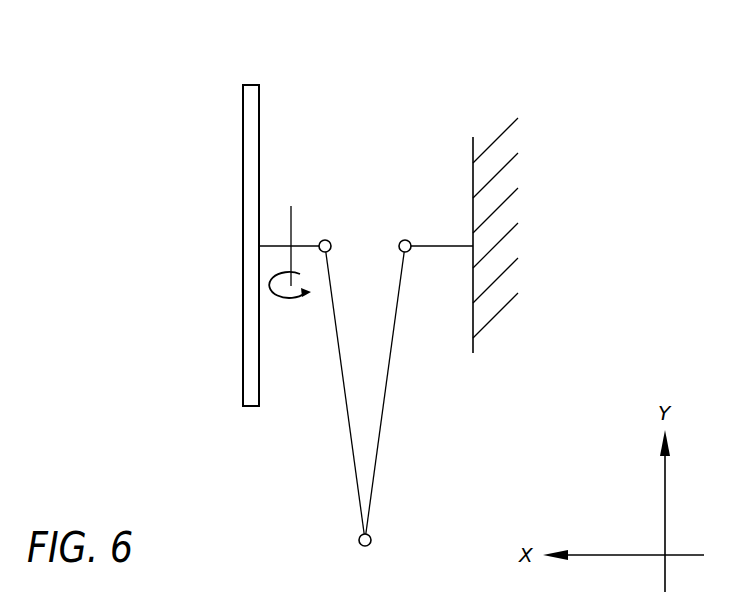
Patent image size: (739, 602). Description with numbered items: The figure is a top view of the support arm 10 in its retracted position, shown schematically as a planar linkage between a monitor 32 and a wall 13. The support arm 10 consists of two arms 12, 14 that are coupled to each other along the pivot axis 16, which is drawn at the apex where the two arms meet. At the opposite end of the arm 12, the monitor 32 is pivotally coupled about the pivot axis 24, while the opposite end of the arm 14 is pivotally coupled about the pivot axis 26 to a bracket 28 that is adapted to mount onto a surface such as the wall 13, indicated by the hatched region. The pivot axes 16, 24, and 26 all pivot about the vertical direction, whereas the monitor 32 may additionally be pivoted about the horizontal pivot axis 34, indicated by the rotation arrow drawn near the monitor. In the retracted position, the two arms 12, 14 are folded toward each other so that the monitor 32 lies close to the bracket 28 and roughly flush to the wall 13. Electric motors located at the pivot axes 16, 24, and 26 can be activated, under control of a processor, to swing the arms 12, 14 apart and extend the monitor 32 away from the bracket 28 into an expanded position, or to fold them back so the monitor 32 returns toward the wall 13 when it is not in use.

The support arm 10 is at (434, 84).
The arm 12 is at (343, 393).
The wall 13 is at (515, 172).
The arm 14 is at (388, 393).
The pivot axis 16 is at (365, 547).
The pivot axis 24 is at (325, 240).
The pivot axis 26 is at (405, 240).
The bracket 28 is at (445, 246).
The monitor 32 is at (250, 408).
The pivot axis 34 is at (291, 213).